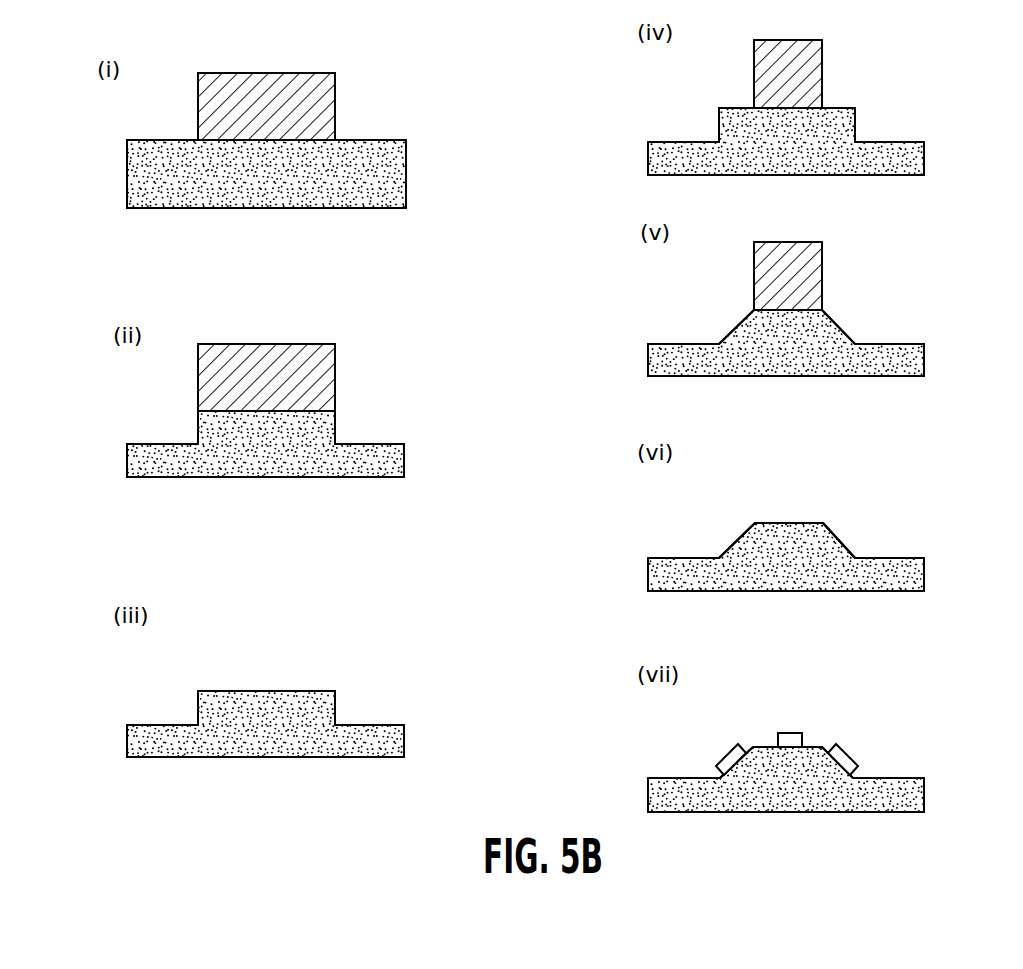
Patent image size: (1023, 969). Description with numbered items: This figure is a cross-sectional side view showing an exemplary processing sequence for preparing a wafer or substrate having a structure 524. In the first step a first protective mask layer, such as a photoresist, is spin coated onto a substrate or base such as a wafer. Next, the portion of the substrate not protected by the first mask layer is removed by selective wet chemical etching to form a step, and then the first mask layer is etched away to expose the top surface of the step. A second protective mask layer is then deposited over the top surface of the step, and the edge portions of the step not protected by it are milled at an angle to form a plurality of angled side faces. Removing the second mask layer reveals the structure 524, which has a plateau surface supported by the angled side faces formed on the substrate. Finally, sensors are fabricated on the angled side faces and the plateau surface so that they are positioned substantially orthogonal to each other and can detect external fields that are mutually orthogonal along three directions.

The structure 524 is at (739, 511).